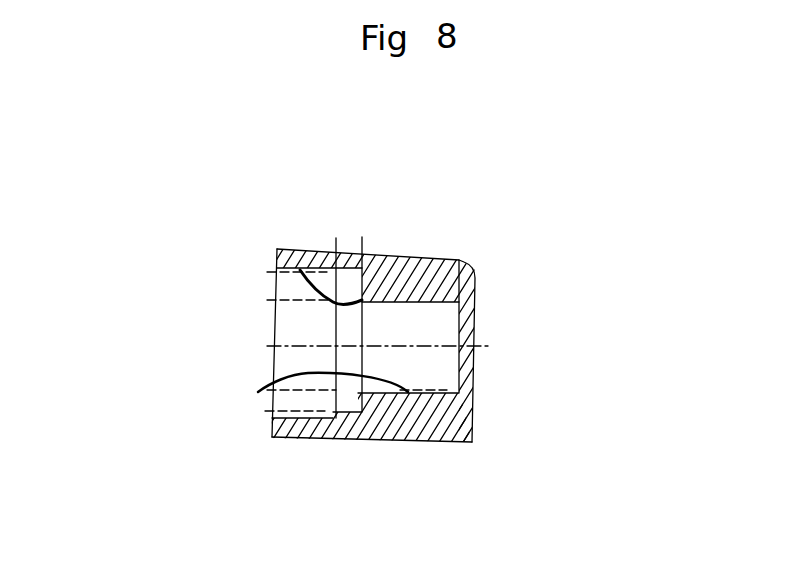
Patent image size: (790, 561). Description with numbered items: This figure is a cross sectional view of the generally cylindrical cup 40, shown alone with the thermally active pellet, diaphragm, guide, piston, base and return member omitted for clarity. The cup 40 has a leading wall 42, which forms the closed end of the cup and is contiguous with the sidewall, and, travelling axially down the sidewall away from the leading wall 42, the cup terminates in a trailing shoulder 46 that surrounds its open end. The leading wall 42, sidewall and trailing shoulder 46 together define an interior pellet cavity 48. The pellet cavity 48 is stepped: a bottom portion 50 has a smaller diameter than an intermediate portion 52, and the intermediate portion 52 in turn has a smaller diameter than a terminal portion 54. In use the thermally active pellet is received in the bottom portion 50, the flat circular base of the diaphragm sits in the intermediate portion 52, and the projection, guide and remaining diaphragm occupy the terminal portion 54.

The generally cylindrical cup 40 is at (478, 365).
The leading wall 42 is at (466, 402).
The trailing shoulder 46 is at (278, 249).
The interior pellet cavity 48 is at (258, 328).
The bottom portion 50 is at (258, 392).
The intermediate portion 52 is at (353, 278).
The terminal portion 54 is at (362, 300).